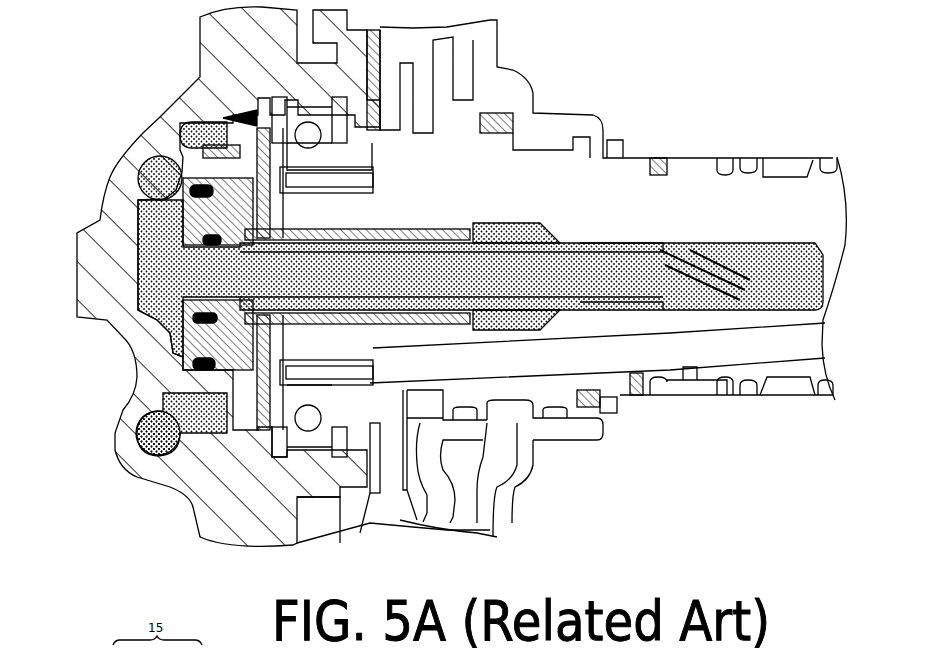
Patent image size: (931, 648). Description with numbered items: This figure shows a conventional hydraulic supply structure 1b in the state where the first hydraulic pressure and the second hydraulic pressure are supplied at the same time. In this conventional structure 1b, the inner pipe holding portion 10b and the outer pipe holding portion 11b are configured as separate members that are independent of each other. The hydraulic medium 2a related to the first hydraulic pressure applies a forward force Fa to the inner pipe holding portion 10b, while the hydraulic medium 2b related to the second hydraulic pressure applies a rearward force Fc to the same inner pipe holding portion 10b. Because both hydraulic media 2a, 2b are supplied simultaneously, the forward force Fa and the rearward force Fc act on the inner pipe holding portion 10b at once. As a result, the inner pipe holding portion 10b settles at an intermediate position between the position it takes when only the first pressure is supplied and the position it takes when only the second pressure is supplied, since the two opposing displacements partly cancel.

The conventional hydraulic supply structure 1b is at (147, 123).
The outer pipe holding portion 11b is at (197, 88).
The inner pipe holding portion 10b is at (107, 175).
The hydraulic medium 2a is at (779, 243).
The hydraulic medium 2b is at (518, 222).
The forward force Fa is at (170, 195).
The rearward force Fc is at (237, 213).